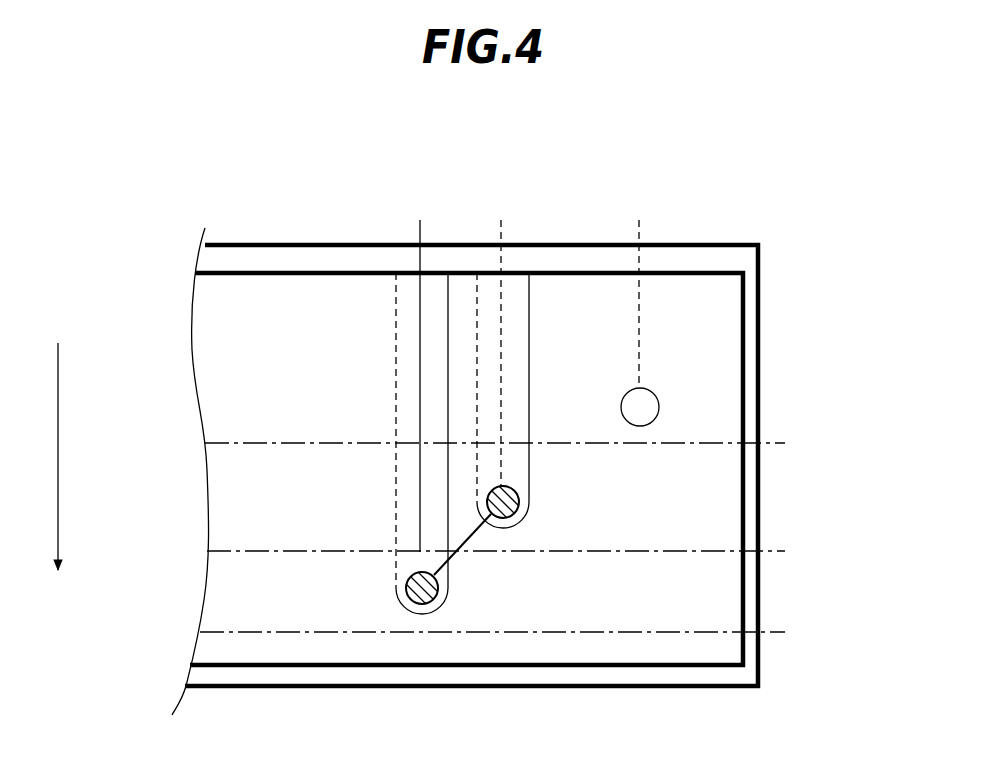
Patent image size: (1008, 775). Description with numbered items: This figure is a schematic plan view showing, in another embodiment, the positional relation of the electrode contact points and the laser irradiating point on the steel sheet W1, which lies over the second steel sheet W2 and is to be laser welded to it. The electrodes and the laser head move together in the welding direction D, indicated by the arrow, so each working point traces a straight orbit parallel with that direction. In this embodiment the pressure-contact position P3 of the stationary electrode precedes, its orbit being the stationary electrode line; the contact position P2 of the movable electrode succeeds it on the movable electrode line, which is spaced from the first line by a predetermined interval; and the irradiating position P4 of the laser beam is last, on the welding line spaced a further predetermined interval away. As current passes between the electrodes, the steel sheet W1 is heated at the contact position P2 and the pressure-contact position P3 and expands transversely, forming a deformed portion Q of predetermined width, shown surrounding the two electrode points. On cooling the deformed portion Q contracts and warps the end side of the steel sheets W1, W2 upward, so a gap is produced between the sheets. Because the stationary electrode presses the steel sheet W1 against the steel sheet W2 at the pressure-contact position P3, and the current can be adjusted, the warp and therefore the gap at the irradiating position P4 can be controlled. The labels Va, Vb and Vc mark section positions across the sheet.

The steel sheet W1 is at (202, 326).
The steel sheet W2 is at (214, 262).
The welding direction D is at (45, 456).
The deformed portion Q is at (407, 327).
The contact position P2 is at (522, 515).
The pressure-contact position P3 is at (403, 600).
The irradiating position P4 is at (648, 402).
The section line Va is at (785, 632).
The section line Vb is at (785, 551).
The section line Vc is at (785, 443).